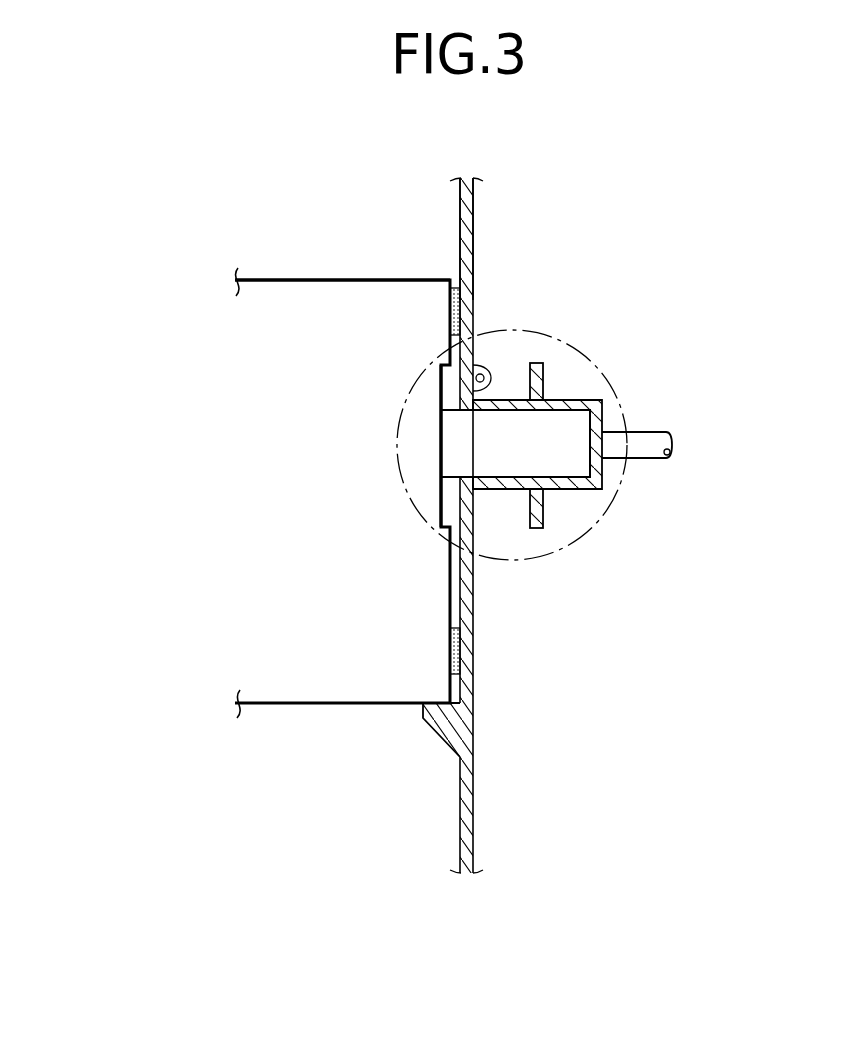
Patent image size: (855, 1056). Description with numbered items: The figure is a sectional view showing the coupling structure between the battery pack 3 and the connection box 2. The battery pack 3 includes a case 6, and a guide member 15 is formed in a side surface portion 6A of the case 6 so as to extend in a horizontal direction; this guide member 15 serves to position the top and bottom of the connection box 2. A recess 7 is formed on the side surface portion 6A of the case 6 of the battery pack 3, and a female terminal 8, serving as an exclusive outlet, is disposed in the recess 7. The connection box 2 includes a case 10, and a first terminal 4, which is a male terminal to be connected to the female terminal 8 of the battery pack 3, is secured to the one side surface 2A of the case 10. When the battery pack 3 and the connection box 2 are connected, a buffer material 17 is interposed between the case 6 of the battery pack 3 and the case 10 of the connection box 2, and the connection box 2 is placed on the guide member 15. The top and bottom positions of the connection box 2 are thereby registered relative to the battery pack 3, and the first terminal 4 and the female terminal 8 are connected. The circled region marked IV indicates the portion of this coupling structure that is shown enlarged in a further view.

The connection box 2 is at (267, 303).
The one side surface 2A is at (463, 340).
The battery pack 3 is at (590, 231).
The first terminal 4 is at (523, 457).
The case 6 is at (465, 838).
The side surface portion 6A is at (470, 213).
The recess 7 is at (558, 412).
The female terminal 8 is at (608, 415).
The case 10 is at (313, 280).
The guide member 15 is at (442, 727).
The buffer material 17 is at (448, 312).
The enlarged portion shown in FIG. 4 IV is at (590, 528).